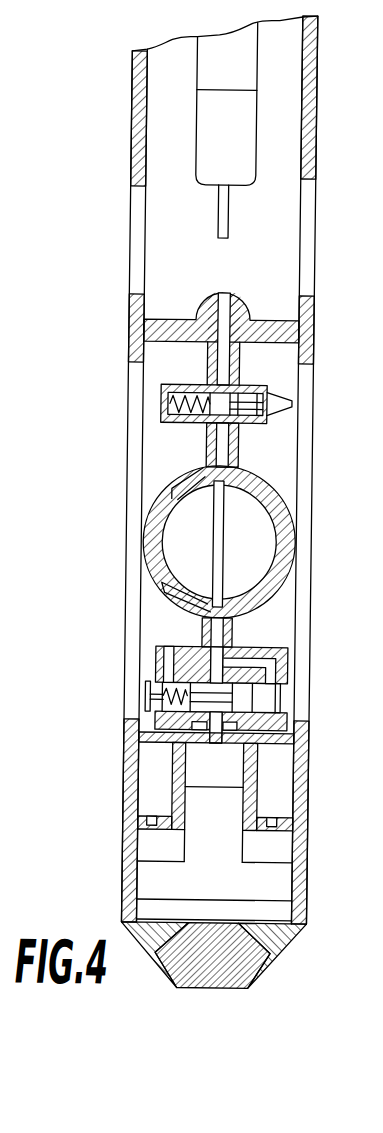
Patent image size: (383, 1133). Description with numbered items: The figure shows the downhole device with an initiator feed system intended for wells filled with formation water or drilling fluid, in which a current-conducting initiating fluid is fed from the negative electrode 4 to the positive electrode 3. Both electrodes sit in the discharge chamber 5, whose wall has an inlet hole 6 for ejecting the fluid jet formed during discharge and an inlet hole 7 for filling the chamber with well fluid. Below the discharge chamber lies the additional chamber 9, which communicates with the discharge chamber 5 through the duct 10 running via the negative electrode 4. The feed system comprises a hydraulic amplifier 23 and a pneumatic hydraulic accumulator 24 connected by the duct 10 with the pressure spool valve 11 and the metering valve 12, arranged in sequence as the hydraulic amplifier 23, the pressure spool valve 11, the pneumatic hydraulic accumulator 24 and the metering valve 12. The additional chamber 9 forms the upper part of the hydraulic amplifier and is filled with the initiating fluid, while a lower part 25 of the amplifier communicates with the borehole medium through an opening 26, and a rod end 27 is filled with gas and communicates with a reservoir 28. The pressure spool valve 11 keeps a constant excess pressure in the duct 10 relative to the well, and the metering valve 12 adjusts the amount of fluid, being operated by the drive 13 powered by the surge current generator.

The positive electrode 3 is at (220, 222).
The negative electrode 4 is at (233, 297).
The discharge chamber 5 is at (150, 208).
The inlet hole 6 is at (137, 262).
The inlet hole 7 is at (136, 115).
The additional chamber 9 is at (197, 768).
The duct 10 is at (203, 632).
The pressure spool valve 11 is at (287, 648).
The metering valve 12 is at (246, 411).
The drive 13 is at (280, 401).
The hydraulic amplifier 23 is at (202, 810).
The pneumatic hydraulic accumulator 24 is at (172, 531).
The lower part 25 is at (146, 908).
The opening 26 is at (276, 952).
The rod end 27 is at (151, 847).
The reservoir 28 is at (151, 802).